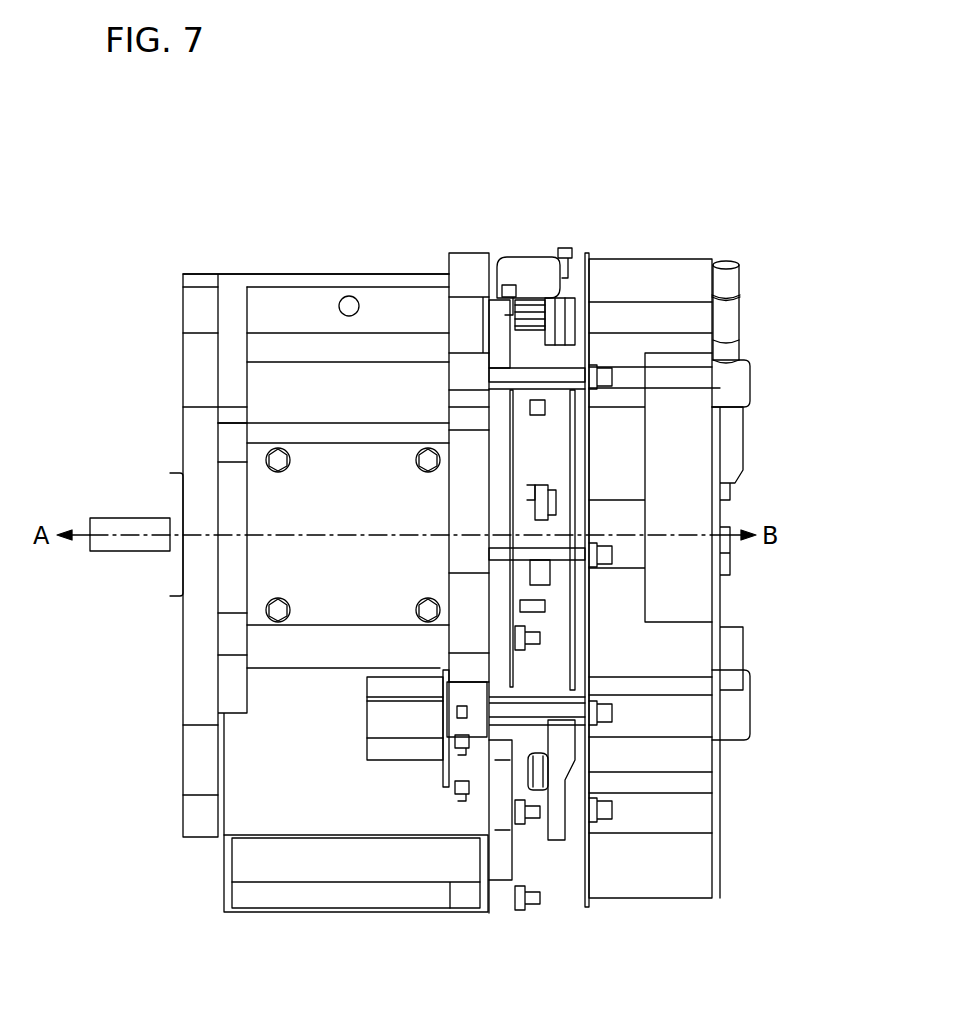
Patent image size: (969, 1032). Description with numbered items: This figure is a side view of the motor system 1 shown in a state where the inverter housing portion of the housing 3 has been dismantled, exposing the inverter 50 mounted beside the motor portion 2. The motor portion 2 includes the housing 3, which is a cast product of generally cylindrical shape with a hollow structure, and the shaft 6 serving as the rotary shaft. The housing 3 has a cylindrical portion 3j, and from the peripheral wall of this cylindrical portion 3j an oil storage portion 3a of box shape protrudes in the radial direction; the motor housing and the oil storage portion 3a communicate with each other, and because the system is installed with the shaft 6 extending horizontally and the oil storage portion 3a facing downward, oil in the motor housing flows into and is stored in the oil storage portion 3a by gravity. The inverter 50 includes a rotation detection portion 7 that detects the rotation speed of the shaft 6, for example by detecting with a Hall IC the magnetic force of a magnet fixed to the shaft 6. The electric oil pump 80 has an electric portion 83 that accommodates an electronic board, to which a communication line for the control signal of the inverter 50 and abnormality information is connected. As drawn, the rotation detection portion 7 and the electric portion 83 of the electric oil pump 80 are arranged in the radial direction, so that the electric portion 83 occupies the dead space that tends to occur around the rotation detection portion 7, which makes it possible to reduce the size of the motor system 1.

The motor system 1 is at (755, 238).
The motor portion 2 is at (487, 232).
The housing 3 is at (358, 272).
The cylindrical portion 3j is at (258, 273).
The oil storage portion 3a is at (370, 911).
The shaft 6 is at (125, 517).
The rotation detection portion 7 is at (548, 488).
The inverter 50 is at (738, 232).
The electric oil pump 80 is at (500, 840).
The electric portion 83 is at (565, 854).